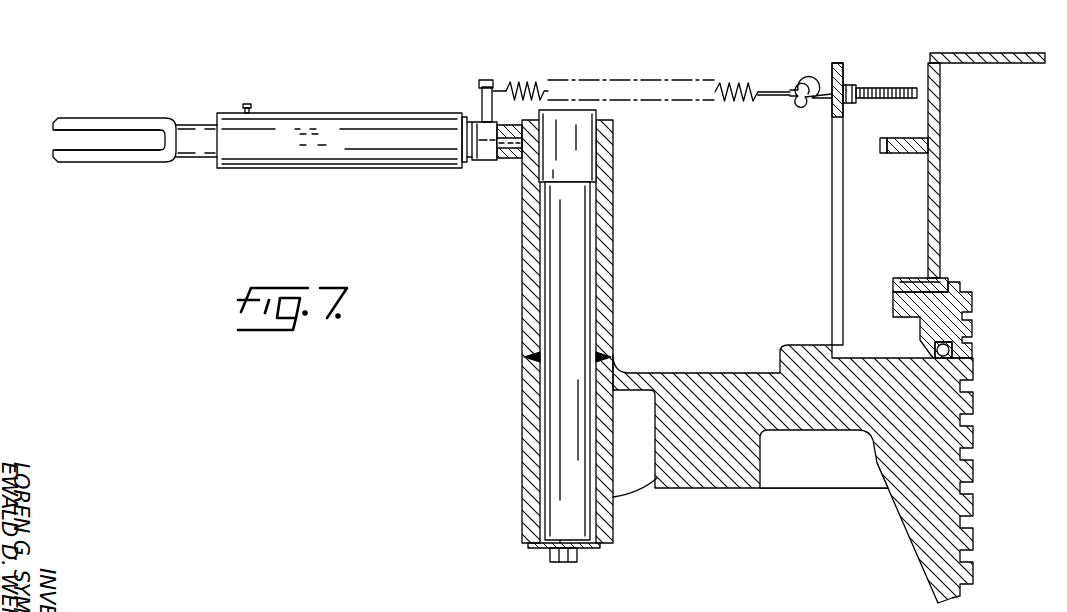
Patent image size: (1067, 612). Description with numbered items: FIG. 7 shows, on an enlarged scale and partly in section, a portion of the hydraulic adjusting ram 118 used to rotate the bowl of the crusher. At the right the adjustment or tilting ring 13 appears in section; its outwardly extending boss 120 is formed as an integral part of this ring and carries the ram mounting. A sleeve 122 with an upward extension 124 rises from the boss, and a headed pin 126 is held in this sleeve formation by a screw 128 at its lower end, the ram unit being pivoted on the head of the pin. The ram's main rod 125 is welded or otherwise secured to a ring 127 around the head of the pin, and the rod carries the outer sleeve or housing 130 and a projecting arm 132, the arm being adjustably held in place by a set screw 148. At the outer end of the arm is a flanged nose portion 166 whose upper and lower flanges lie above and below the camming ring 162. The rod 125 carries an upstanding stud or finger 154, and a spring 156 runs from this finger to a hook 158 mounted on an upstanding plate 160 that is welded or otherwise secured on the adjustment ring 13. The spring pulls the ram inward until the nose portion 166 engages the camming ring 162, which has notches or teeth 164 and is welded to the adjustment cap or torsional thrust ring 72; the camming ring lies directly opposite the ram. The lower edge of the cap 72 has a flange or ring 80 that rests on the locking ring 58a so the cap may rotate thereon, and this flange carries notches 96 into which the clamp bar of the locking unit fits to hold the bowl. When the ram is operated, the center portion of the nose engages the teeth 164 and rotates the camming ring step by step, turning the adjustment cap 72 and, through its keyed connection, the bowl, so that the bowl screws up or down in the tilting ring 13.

The adjustment or tilting ring 13 is at (912, 518).
The locking ring 58a is at (952, 305).
The adjustment cap or torsional thrust ring 72 is at (938, 112).
The flange or ring 80 is at (941, 278).
The notches 96 is at (910, 280).
The ram 118 is at (332, 104).
The boss 120 is at (710, 476).
The sleeve 122 is at (524, 446).
The upward extension 124 is at (522, 292).
The main rod 125 is at (484, 162).
The headed pin 126 is at (591, 262).
The ring 127 is at (613, 152).
The screw 128 is at (566, 563).
The outer sleeve or housing 130 is at (365, 116).
The projecting arm 132 is at (196, 88).
The set screw 148 is at (252, 103).
The upstanding stud or finger 154 is at (500, 56).
The spring 156 is at (540, 80).
The hook 158 is at (804, 74).
The upstanding plate 160 is at (840, 200).
The camming ring 162 is at (914, 121).
The notches or teeth 164 is at (882, 146).
The flanged nose portion 166 is at (78, 138).